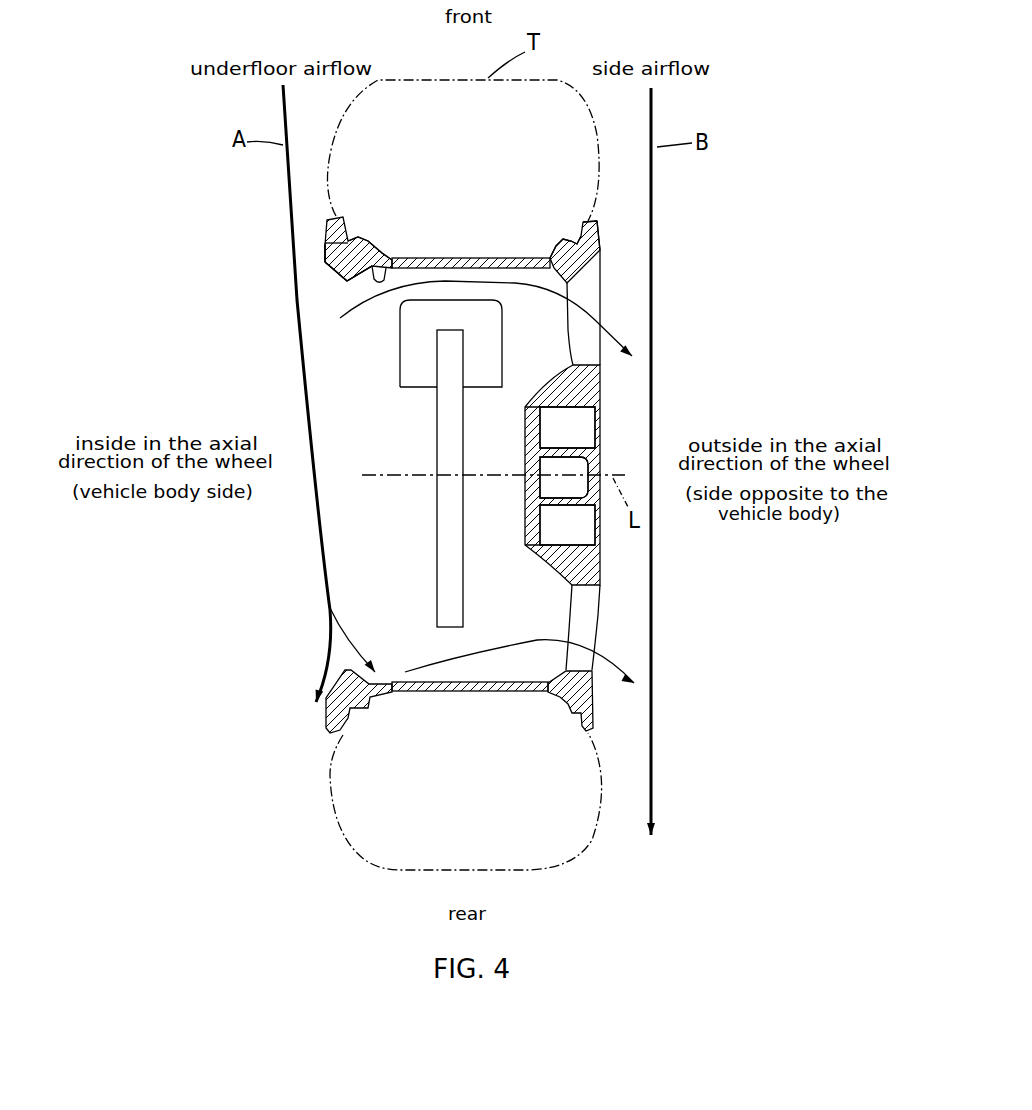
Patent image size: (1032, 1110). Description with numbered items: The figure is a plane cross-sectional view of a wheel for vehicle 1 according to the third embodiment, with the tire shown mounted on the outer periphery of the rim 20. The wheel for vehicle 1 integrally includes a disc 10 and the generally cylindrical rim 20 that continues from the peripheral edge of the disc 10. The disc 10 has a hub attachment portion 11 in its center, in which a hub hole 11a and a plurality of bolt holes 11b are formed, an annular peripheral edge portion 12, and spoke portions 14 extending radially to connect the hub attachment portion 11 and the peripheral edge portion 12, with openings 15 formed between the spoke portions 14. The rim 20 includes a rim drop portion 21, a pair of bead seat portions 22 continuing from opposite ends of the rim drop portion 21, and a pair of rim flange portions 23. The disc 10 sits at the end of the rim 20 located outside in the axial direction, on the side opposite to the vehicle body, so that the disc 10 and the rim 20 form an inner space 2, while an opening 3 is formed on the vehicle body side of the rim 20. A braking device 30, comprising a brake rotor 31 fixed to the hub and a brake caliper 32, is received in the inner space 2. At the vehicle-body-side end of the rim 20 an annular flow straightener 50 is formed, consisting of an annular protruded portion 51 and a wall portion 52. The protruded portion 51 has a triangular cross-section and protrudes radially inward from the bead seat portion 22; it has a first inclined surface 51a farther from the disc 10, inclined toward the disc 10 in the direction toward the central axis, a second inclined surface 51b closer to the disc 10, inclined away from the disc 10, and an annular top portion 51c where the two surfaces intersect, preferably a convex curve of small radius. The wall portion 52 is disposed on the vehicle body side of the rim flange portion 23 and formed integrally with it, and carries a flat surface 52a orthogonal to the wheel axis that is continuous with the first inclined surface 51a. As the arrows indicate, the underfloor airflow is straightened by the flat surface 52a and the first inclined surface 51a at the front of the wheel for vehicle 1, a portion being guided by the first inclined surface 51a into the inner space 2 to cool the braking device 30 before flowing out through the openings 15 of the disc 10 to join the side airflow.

The wheel for vehicle 1 is at (524, 432).
The inner space 2 is at (489, 447).
The opening 3 is at (325, 414).
The disc 10 is at (605, 563).
The hub attachment portion 11 is at (582, 390).
The hub hole 11a is at (544, 467).
The bolt holes 11b is at (539, 425).
The peripheral edge portion 12 is at (587, 250).
The spoke portions 14 is at (599, 295).
The openings 15 is at (584, 298).
The rim 20 is at (503, 226).
The rim drop portion 21 is at (487, 259).
The bead seat portions 22 is at (350, 238).
The rim flange portions 23 is at (333, 215).
The braking device 30 is at (398, 343).
The brake rotor 31 is at (457, 438).
The brake caliper 32 is at (493, 345).
The flow straightener 50 is at (316, 257).
The protruded portion 51 is at (336, 280).
The first inclined surface 51a is at (336, 267).
The second inclined surface 51b is at (376, 264).
The top portion 51c is at (346, 283).
The wall portion 52 is at (325, 223).
The flat surface 52a is at (323, 238).